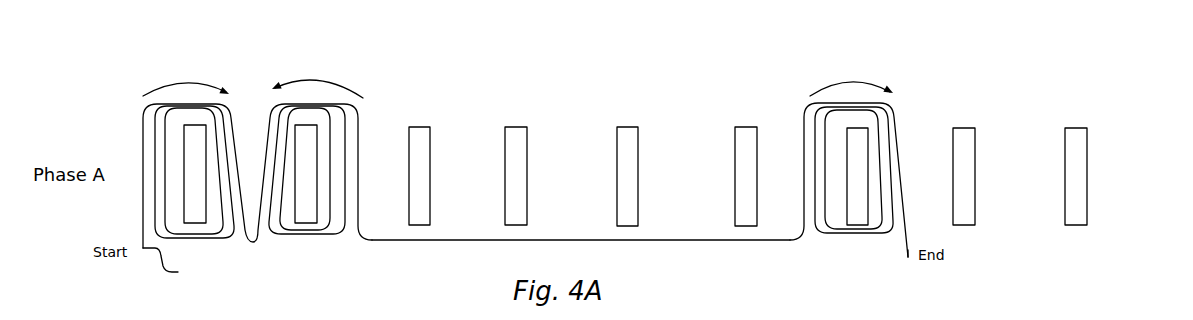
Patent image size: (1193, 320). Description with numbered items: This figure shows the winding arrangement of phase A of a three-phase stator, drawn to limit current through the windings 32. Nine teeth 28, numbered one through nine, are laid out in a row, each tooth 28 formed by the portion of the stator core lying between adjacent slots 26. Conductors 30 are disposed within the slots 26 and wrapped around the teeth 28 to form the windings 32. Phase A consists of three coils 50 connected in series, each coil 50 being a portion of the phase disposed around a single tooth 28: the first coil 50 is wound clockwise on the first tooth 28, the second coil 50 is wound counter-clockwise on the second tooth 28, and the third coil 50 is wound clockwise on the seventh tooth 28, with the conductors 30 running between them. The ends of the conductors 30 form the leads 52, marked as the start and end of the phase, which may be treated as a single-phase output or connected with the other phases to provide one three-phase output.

The slots 26 is at (252, 130).
The teeth 28 is at (200, 222).
The conductors 30 is at (455, 240).
The windings 32 is at (368, 100).
The coils 50 is at (228, 105).
The leads 52 is at (935, 236).